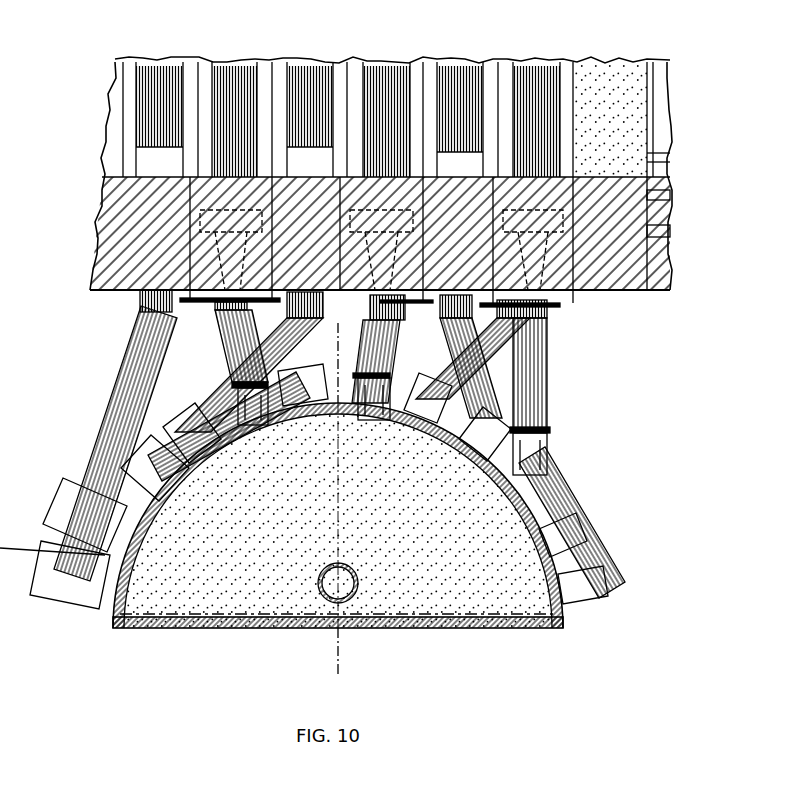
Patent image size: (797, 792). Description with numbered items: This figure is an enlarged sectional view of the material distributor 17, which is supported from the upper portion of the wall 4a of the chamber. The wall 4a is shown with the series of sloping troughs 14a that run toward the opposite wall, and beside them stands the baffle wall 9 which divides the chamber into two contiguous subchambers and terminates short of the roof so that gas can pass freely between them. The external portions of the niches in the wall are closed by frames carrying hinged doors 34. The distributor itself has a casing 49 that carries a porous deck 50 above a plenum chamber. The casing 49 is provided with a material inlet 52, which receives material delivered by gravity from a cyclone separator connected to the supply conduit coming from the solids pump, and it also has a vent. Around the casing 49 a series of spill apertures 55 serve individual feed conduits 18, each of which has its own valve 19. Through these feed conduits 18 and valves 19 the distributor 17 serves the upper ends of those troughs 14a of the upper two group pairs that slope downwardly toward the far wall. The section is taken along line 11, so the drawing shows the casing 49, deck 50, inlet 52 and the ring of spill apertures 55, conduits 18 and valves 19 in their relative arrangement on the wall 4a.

The troughs 14a is at (453, 60).
The baffle wall 9 is at (606, 64).
The wall 4a is at (110, 292).
The hinged doors 34 is at (580, 306).
The feed conduits 18 is at (215, 398).
The valves 19 is at (248, 382).
The spill apertures 55 is at (555, 558).
The material distributor 17 is at (160, 632).
The casing 49 is at (430, 628).
The porous deck 50 is at (502, 600).
The material inlet 52 is at (350, 600).
The duct 11 is at (354, 323).